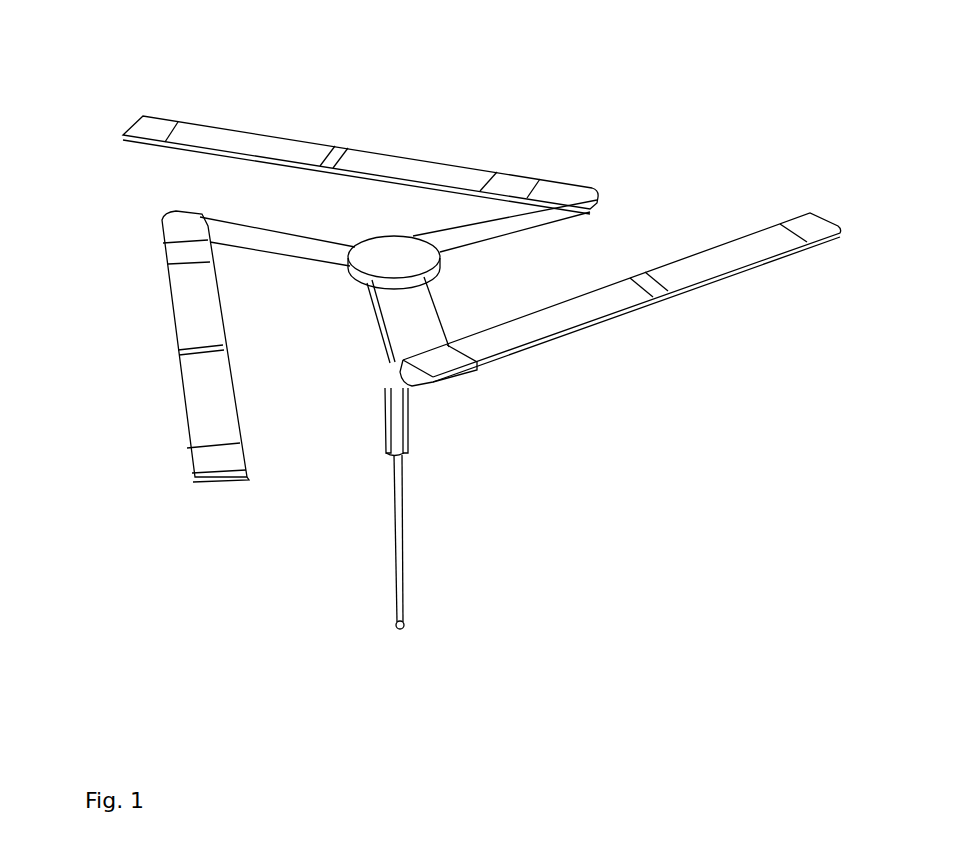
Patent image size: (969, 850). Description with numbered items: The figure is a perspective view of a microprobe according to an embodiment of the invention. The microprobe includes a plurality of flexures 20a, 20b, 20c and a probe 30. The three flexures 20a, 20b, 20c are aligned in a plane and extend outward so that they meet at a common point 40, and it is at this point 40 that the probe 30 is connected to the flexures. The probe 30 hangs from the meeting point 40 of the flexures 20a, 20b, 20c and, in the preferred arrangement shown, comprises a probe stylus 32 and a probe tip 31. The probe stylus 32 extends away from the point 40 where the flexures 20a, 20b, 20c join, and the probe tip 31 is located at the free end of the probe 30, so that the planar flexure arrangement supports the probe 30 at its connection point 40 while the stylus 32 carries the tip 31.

The flexure 20a is at (247, 152).
The flexure 20b is at (733, 248).
The flexure 20c is at (188, 432).
The point 40 is at (367, 253).
The probe 30 is at (403, 552).
The probe tip 31 is at (380, 622).
The probe stylus 32 is at (378, 481).